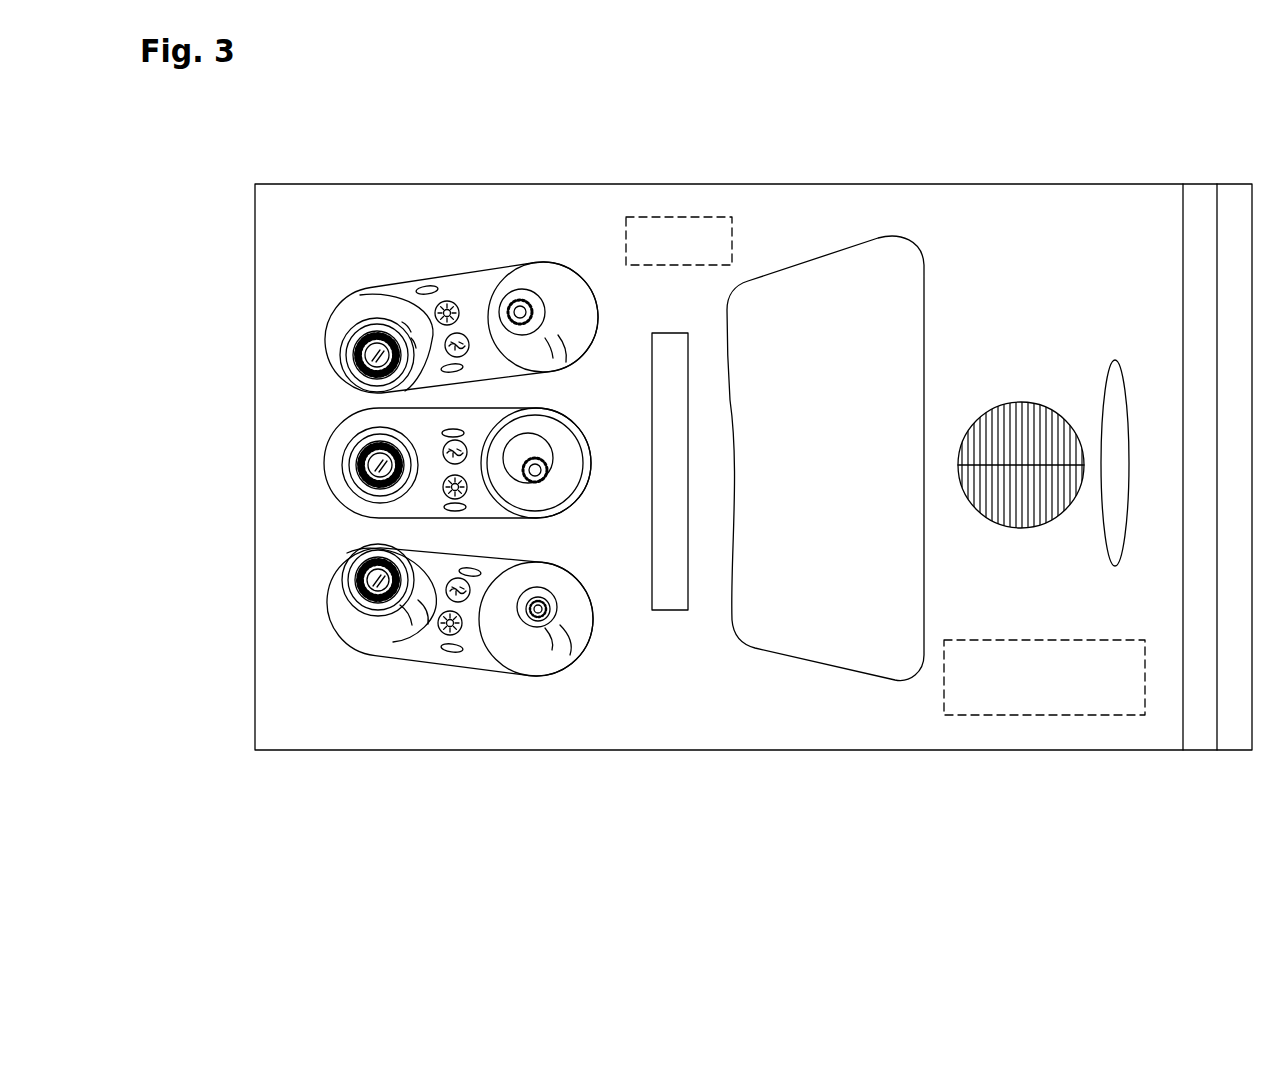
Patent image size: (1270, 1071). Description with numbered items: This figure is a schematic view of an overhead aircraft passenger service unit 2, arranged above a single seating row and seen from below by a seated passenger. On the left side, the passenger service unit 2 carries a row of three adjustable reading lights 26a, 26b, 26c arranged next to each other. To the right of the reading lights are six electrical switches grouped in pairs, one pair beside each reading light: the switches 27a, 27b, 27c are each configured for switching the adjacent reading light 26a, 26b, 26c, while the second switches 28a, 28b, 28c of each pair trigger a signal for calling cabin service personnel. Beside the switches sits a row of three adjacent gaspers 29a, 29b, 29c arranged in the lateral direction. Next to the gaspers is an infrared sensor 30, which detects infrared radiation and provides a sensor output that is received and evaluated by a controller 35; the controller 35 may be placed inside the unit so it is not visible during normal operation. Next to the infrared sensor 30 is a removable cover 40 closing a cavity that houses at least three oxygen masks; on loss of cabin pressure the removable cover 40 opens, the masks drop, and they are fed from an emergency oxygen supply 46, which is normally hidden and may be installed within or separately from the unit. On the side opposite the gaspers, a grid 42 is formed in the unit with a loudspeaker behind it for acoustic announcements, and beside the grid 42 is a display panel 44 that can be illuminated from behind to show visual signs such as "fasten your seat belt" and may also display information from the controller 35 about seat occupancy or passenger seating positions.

The aircraft passenger service unit 2 is at (1116, 160).
The adjustable reading light 26a is at (363, 322).
The electrical switch 27a is at (449, 300).
The electrical switch 28a is at (455, 334).
The gasper 29a is at (544, 306).
The adjustable reading light 26b is at (352, 494).
The electrical switch 27b is at (469, 494).
The electrical switch 28b is at (470, 440).
The gasper 29b is at (552, 480).
The adjustable reading light 26c is at (370, 611).
The electrical switch 27c is at (438, 633).
The electrical switch 28c is at (468, 612).
The gasper 29c is at (535, 622).
The infrared sensor 30 is at (670, 592).
The controller 35 is at (675, 225).
The removable cover 40 is at (807, 630).
The grid 42 is at (1021, 399).
The display panel 44 is at (1123, 398).
The emergency oxygen supply 46 is at (1040, 685).